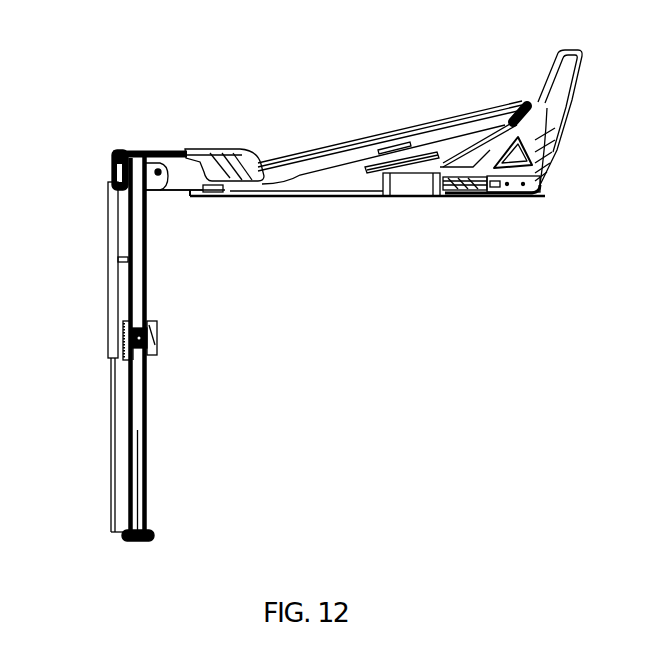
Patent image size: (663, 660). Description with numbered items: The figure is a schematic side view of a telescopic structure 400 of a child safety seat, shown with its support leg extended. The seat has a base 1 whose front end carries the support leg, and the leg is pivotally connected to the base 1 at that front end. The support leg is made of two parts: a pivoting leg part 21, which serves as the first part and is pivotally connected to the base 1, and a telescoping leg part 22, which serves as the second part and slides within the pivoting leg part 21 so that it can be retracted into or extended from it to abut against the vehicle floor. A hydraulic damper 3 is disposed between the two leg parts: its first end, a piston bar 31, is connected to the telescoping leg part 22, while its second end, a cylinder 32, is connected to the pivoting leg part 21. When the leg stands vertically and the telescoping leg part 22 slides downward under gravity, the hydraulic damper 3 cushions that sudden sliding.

The telescopic structure 400 is at (435, 47).
The base 1 is at (362, 148).
The hydraulic damper 3 is at (136, 345).
The pivoting leg part 21 is at (133, 297).
The telescoping leg part 22 is at (145, 457).
The piston bar 31 is at (110, 442).
The cylinder 32 is at (115, 307).